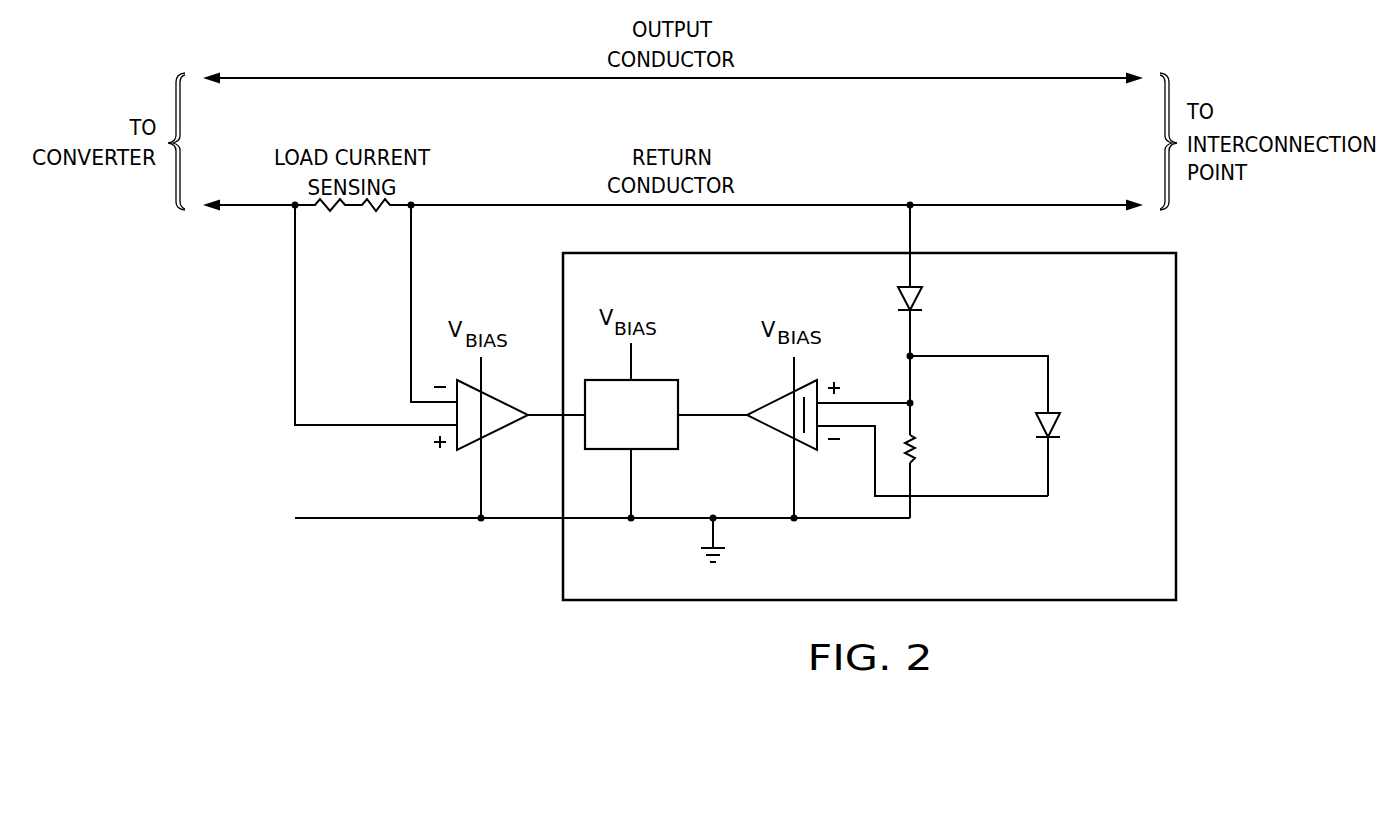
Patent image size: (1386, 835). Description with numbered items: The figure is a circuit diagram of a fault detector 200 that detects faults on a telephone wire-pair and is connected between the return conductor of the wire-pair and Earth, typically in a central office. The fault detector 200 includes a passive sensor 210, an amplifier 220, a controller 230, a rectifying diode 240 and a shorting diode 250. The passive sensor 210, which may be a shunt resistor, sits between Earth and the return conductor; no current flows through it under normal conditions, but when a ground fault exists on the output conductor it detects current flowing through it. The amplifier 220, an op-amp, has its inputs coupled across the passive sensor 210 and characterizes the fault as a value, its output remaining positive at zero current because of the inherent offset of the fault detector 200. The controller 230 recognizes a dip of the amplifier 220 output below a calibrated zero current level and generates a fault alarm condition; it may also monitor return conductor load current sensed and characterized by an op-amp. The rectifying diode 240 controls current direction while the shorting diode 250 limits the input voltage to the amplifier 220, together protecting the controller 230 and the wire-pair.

The fault detector 200 is at (1003, 600).
The passive sensor 210 is at (918, 452).
The amplifier 220 is at (780, 434).
The controller 230 is at (610, 425).
The rectifying diode 240 is at (915, 301).
The shorting diode 250 is at (1053, 428).